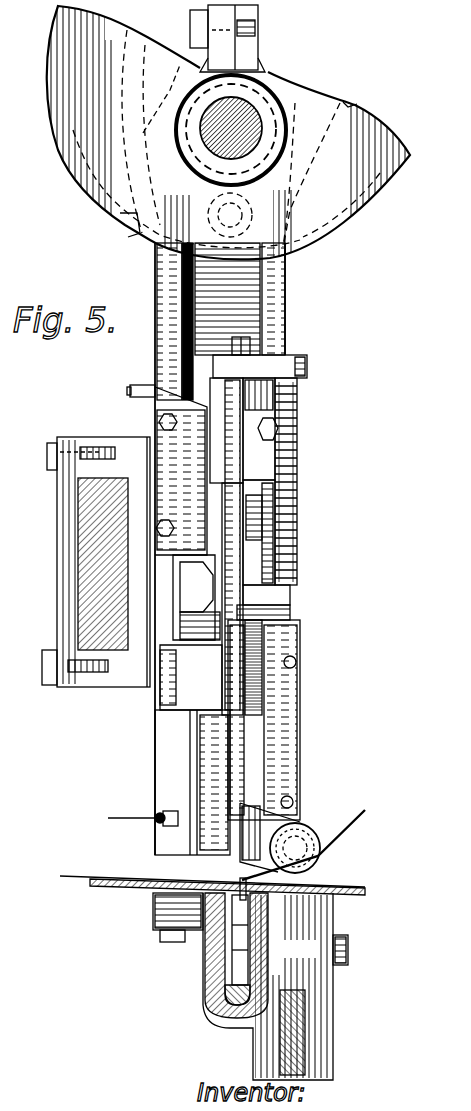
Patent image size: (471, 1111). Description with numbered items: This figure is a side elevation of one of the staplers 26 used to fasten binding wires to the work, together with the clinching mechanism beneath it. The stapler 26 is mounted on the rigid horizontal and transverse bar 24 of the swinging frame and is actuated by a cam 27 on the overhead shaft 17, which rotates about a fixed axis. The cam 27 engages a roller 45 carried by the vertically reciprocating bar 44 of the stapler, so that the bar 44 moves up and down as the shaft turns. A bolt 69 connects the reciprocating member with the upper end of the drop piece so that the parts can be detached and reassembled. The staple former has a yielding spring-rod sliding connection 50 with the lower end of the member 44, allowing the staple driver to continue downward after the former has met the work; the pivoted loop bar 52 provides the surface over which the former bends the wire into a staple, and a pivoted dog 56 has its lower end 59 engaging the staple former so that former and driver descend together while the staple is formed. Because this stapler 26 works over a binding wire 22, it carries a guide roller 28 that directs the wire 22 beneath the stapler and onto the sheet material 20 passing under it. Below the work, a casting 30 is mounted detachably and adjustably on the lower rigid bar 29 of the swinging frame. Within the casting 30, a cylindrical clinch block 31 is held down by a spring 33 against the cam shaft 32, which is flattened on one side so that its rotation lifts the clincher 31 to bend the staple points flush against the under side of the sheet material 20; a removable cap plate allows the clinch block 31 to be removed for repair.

The overhead shaft 17 is at (257, 118).
The cam 27 is at (86, 193).
The roller 45 is at (200, 208).
The vertically reciprocating bar 44 is at (225, 508).
The bolt 69 is at (250, 338).
The stapler 26 is at (155, 358).
The loop bar 52 is at (297, 398).
The spring-rod sliding connection 50 is at (280, 426).
The dog 56 is at (290, 489).
The lower end of dog 59 is at (262, 558).
The guide roller 28 is at (310, 838).
The binding wire 22 is at (353, 823).
The plate 20 is at (98, 884).
The spring 33 is at (216, 922).
The clinch block 31 is at (238, 955).
The cam shaft 32 is at (216, 990).
The casting 30 is at (200, 1022).
The lower rigid bar 29 is at (300, 1034).
The horizontal and transverse bar 24 is at (88, 530).